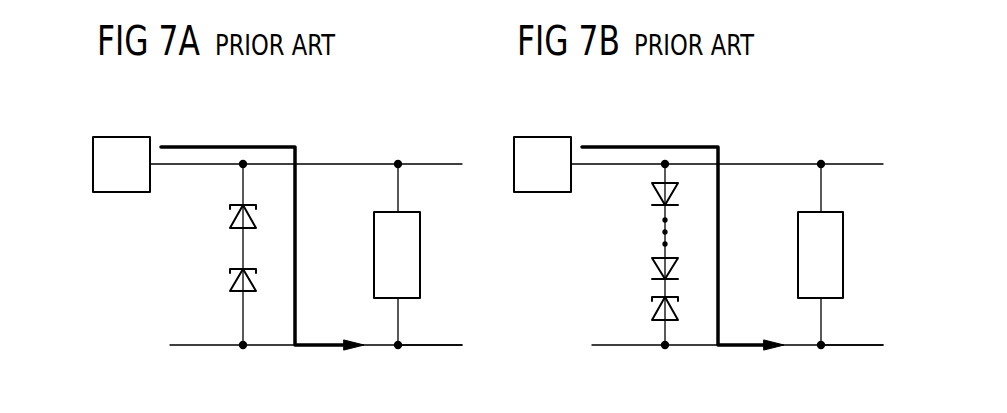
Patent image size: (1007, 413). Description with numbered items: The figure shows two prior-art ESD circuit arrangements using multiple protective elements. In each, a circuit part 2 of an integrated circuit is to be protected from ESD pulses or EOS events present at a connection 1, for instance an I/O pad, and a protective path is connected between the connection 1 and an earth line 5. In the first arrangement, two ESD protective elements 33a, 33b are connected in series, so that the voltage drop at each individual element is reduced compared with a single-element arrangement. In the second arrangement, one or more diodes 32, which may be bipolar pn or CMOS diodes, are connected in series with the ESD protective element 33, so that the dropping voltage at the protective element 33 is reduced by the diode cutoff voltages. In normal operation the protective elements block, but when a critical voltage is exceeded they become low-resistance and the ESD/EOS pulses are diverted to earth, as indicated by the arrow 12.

In FIG. 7A, the connection 1 is at (133, 115).
In FIG. 7B, the connection 1 is at (553, 112).
In FIG. 7A, the circuit part 2 is at (446, 263).
In FIG. 7B, the circuit part 2 is at (868, 263).
In FIG. 7A, the earth line 5 is at (424, 346).
In FIG. 7B, the earth line 5 is at (846, 346).
In FIG. 7A, the arrow 12 is at (252, 147).
In FIG. 7B, the arrow 12 is at (666, 147).
In FIG. 7B, the diodes 32 is at (655, 260).
In FIG. 7B, the ESD protective element 33 is at (652, 303).
In FIG. 7A, the ESD protective element 33a is at (230, 210).
In FIG. 7A, the ESD protective element 33b is at (230, 273).